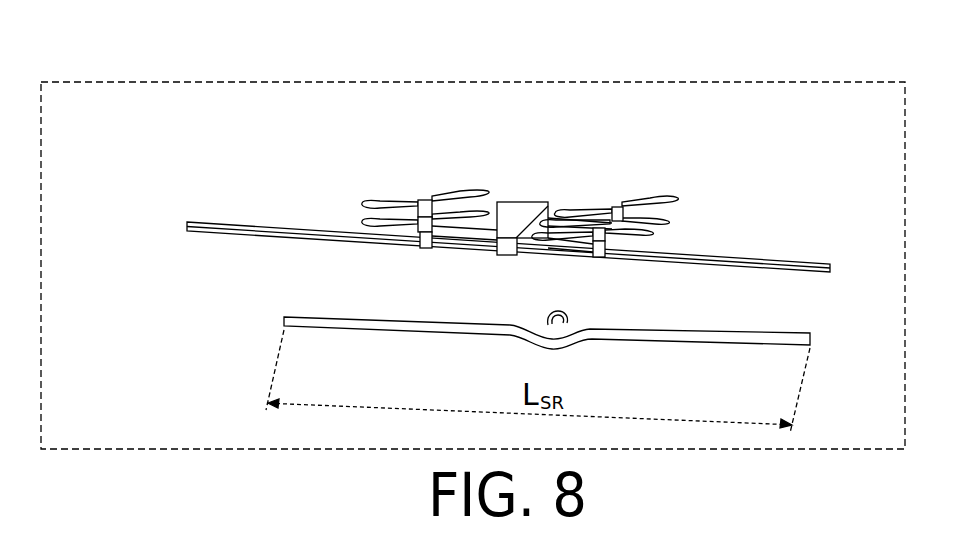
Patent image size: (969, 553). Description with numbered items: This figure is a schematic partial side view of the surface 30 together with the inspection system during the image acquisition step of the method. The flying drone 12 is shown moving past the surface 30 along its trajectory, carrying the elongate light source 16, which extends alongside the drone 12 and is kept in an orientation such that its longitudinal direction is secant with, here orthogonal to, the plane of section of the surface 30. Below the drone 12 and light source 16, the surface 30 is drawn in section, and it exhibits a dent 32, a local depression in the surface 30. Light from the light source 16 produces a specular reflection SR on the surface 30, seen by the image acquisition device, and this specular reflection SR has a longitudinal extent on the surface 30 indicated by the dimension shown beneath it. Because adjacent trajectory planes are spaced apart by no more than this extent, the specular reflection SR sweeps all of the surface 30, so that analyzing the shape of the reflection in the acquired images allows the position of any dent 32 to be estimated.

The flying drone 12 is at (505, 180).
The light source 16 is at (225, 222).
The surface 30 is at (823, 125).
The dent 32 is at (545, 333).
The specular reflection SR is at (315, 320).